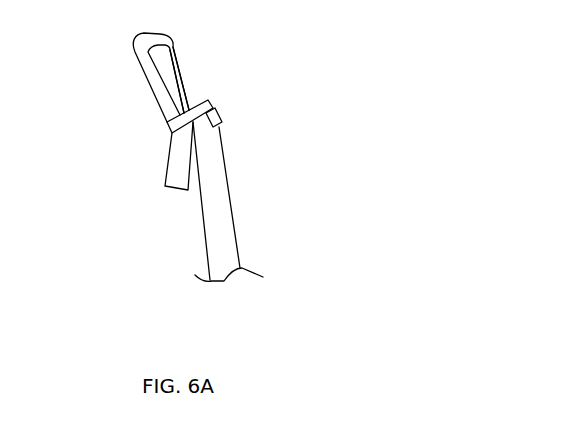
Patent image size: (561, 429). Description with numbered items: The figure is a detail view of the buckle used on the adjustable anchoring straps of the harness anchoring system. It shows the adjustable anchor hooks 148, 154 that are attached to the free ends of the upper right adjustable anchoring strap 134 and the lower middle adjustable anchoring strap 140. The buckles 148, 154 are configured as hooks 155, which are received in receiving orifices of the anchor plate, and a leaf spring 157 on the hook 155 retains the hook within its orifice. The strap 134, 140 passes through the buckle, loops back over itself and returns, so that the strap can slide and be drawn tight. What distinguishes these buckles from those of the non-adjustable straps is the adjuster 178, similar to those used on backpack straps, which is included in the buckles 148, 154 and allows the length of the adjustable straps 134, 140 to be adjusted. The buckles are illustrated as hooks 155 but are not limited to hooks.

The upper right adjustable anchoring strap 134 is at (221, 201).
The lower middle adjustable anchoring strap 140 is at (185, 170).
The anchor hook 148 is at (300, 120).
The anchoring hook 154 is at (291, 121).
The hook 155 is at (144, 72).
The leaf spring 157 is at (181, 79).
The adjuster 178 is at (223, 118).